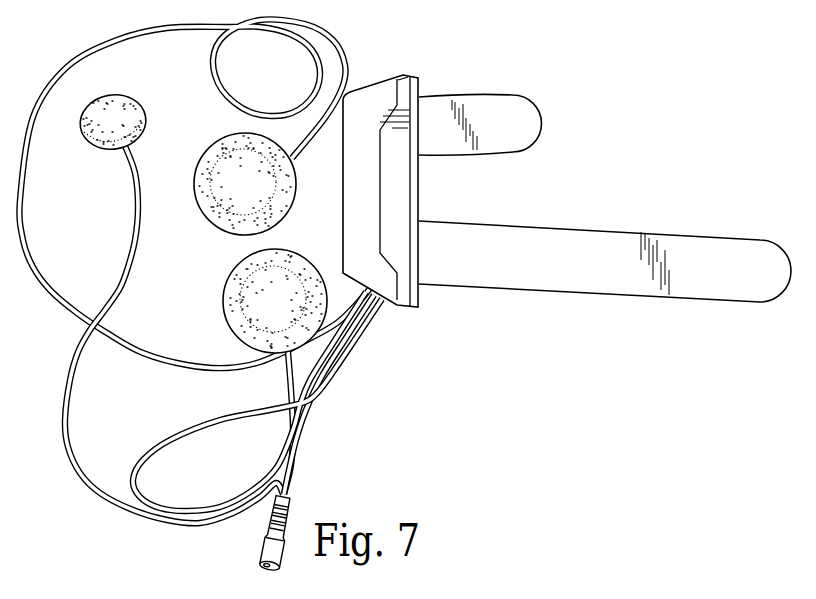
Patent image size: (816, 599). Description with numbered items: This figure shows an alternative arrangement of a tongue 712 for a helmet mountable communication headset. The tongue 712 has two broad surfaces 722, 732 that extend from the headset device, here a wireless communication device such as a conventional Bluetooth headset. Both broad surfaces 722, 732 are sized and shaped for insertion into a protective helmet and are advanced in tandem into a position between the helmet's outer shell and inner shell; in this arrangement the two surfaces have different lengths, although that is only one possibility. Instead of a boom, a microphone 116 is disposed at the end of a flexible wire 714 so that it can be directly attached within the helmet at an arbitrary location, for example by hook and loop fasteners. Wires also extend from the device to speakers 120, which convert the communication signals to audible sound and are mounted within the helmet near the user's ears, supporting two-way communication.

The microphone 116 is at (103, 147).
The speakers 120 is at (241, 262).
The tongue 712 is at (567, 209).
The flexible wire 714 is at (82, 377).
The broad surface 722 is at (480, 93).
The broad surface 732 is at (548, 289).